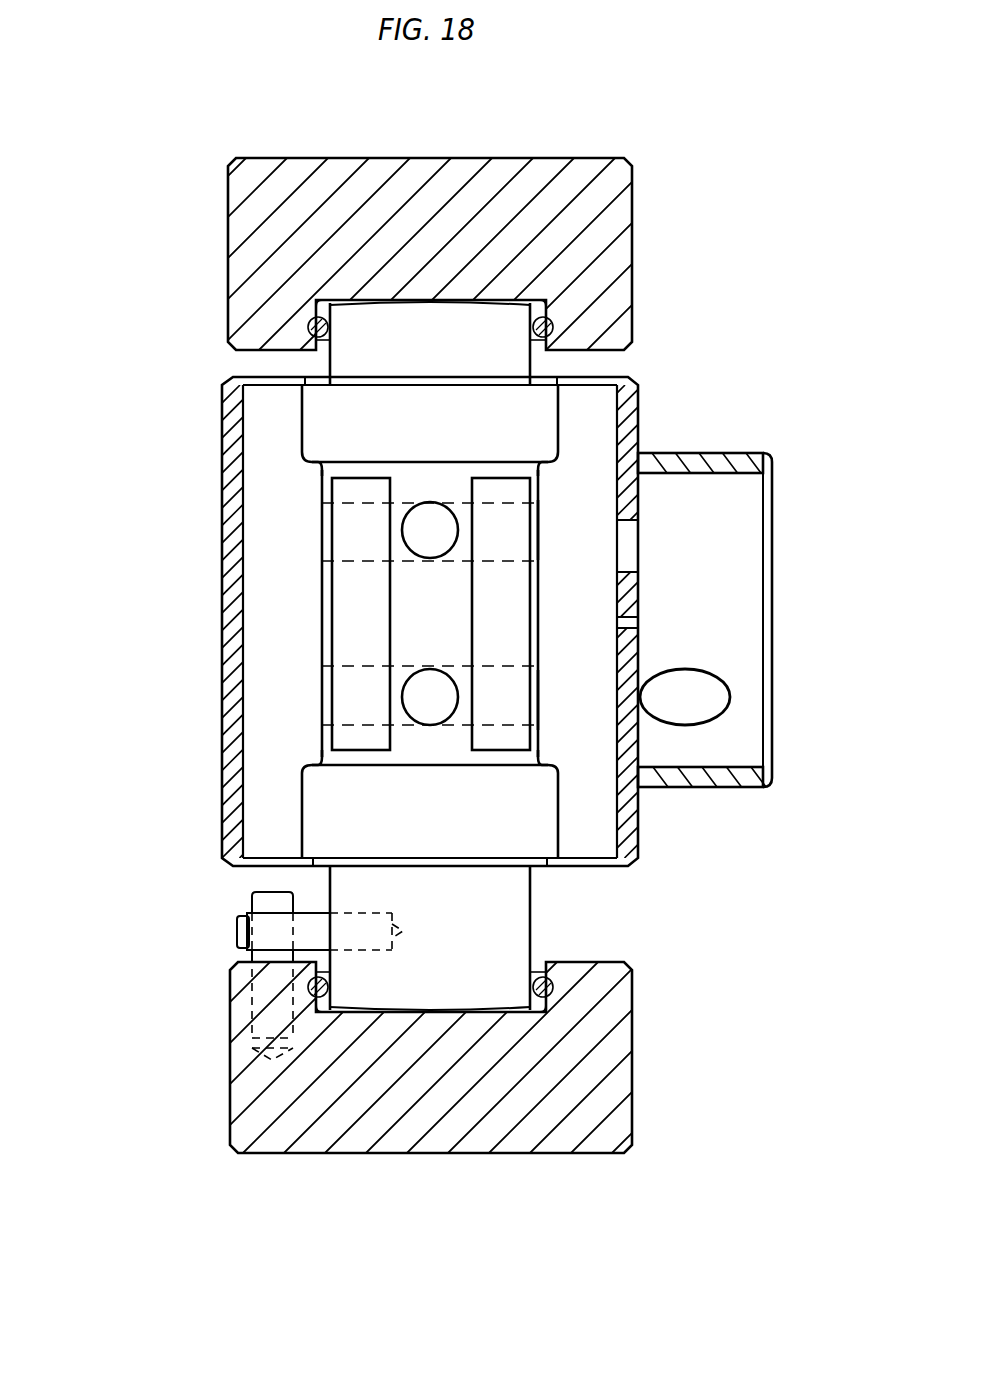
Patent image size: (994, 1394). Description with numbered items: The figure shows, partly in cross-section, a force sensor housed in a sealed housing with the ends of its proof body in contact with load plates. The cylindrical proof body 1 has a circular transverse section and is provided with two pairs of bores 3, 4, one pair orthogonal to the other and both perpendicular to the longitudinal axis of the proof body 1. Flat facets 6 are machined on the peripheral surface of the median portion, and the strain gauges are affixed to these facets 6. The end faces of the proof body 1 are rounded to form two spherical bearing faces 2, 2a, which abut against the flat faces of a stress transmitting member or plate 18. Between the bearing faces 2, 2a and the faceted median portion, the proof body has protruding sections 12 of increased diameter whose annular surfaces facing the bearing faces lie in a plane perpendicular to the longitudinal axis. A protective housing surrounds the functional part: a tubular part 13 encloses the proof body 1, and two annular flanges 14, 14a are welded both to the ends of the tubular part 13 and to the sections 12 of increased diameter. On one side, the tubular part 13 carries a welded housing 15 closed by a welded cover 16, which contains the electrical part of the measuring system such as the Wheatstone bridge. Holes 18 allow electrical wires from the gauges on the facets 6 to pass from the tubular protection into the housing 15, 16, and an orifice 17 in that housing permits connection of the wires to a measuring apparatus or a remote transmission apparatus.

The proof body 1 is at (366, 621).
The spherical bearing face 2 is at (491, 294).
The spherical bearing face 2a is at (341, 1016).
The bore 3 is at (430, 613).
The bore 4 is at (541, 532).
The flat facet 6 is at (431, 614).
The protruding section 12 is at (430, 621).
The tubular part 13 is at (220, 487).
The annular flange 14 is at (258, 378).
The annular flange 14a is at (235, 865).
The housing 15 is at (770, 456).
The cover 16 is at (770, 572).
The orifice 17 is at (698, 707).
The stress transmitting plate 18 is at (226, 188).